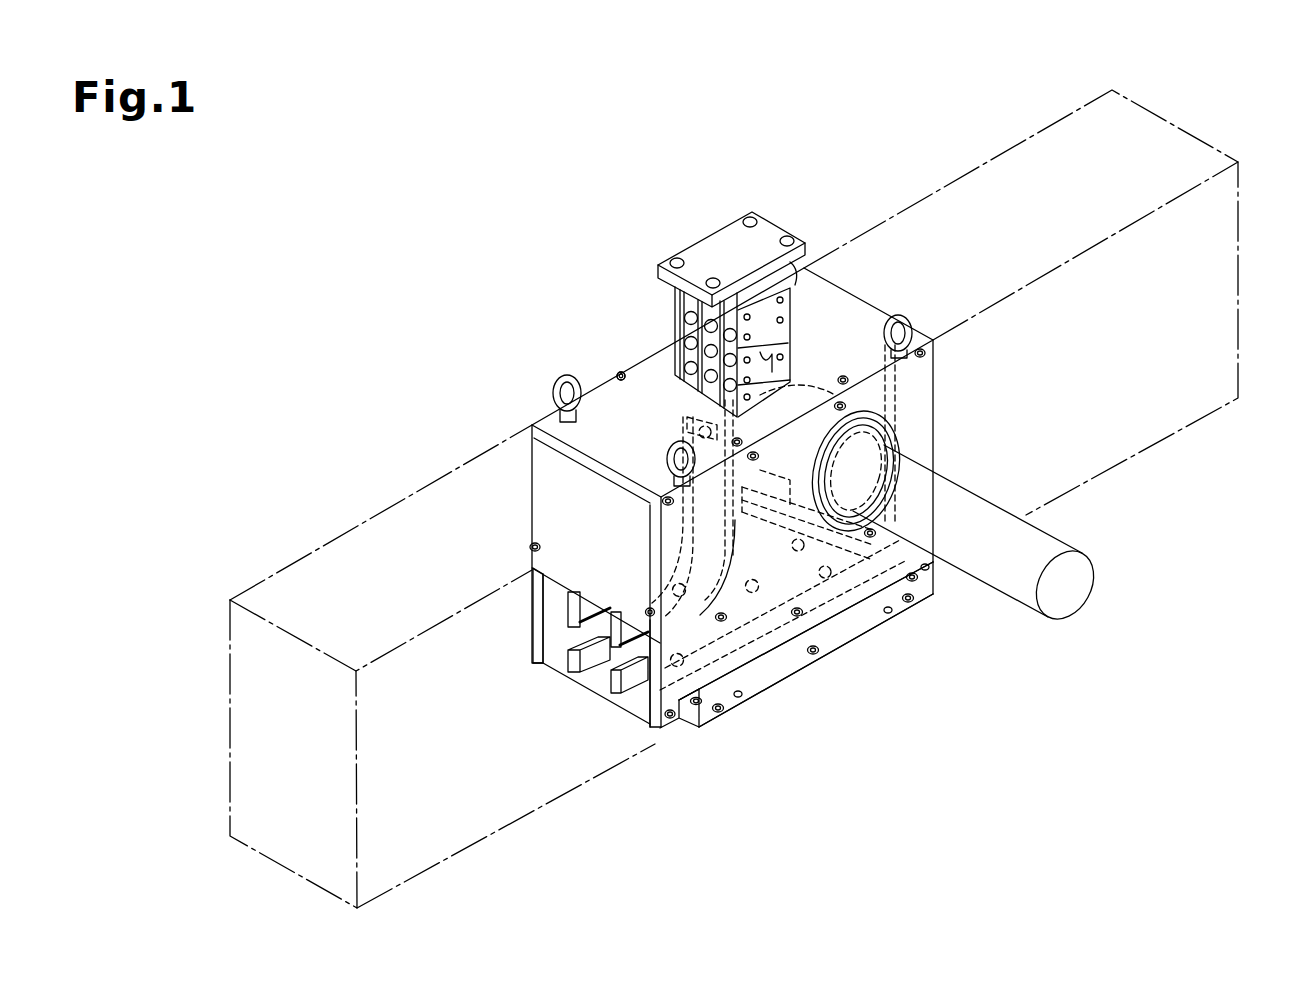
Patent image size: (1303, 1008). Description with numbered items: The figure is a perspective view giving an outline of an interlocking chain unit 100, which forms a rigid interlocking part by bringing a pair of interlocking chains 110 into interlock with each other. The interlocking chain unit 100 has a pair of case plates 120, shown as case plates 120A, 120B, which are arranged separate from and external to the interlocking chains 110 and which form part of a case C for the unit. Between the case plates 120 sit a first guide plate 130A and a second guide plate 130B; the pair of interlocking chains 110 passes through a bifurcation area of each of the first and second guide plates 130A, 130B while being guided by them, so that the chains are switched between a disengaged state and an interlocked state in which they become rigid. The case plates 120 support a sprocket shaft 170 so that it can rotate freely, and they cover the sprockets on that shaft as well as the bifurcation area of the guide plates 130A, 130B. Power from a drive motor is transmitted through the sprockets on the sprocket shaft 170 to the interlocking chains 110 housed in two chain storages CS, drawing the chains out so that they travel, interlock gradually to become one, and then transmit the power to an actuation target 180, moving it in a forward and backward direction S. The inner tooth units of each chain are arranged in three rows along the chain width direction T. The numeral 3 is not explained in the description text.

The interlocking chain unit 100 is at (754, 449).
The interlocking chains 110 is at (668, 529).
The actuation target 180 is at (768, 232).
The sprocket shaft 170 is at (972, 503).
The case plates 120 is at (559, 684).
The case plate 120A is at (534, 643).
The case plate 120B is at (642, 707).
The first guide plate 130A is at (568, 660).
The second guide plate 130B is at (607, 682).
The conveyor 3 is at (930, 687).
The chain storages CS is at (366, 524).
The case C is at (602, 386).
The forward and backward direction S is at (863, 752).
The chain width direction T is at (847, 827).